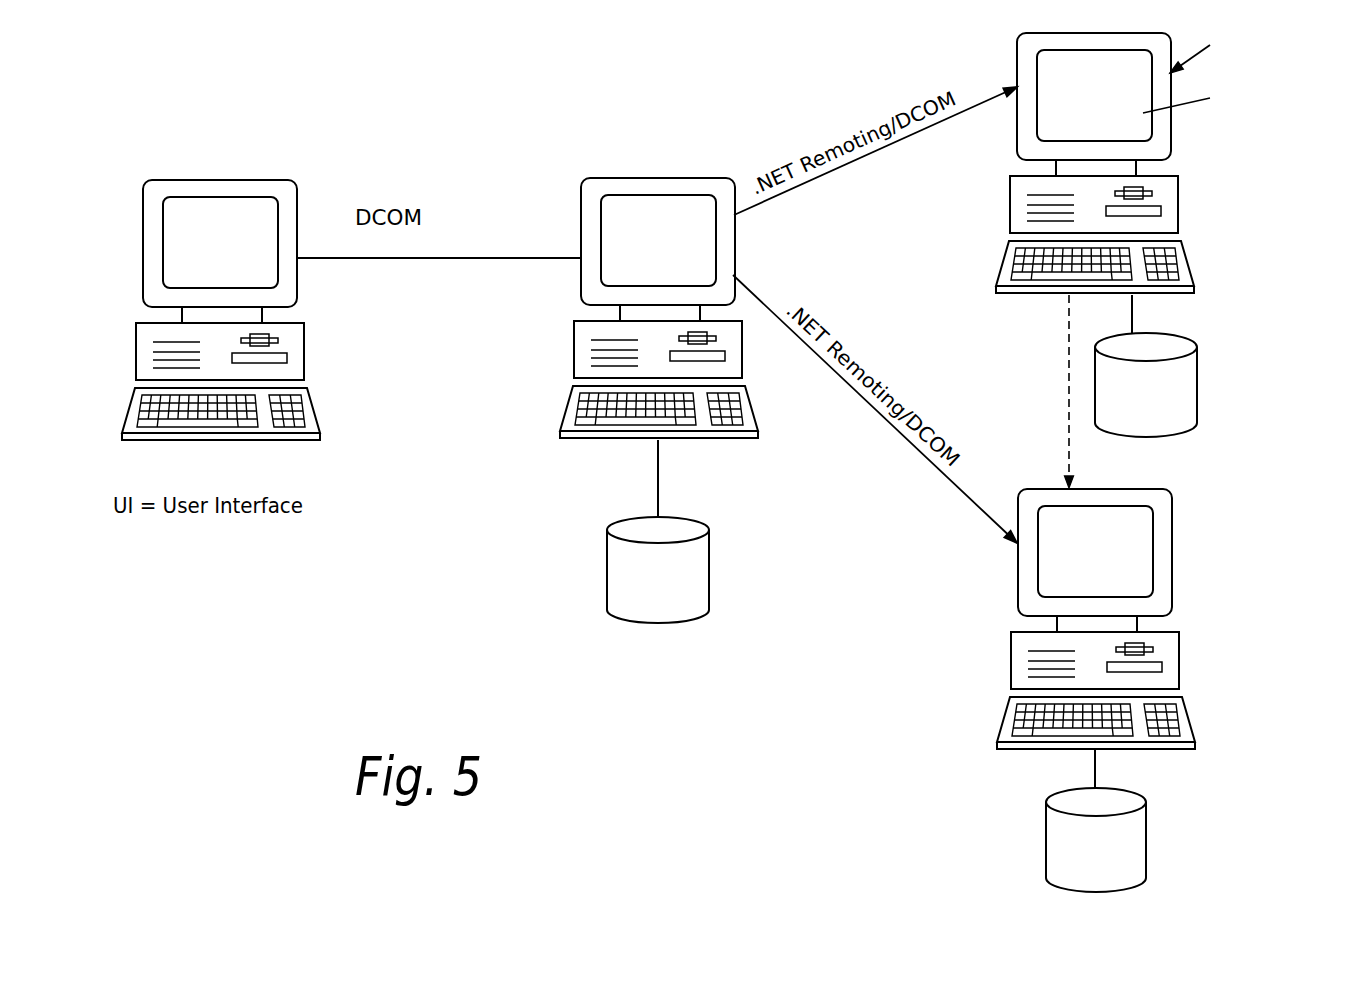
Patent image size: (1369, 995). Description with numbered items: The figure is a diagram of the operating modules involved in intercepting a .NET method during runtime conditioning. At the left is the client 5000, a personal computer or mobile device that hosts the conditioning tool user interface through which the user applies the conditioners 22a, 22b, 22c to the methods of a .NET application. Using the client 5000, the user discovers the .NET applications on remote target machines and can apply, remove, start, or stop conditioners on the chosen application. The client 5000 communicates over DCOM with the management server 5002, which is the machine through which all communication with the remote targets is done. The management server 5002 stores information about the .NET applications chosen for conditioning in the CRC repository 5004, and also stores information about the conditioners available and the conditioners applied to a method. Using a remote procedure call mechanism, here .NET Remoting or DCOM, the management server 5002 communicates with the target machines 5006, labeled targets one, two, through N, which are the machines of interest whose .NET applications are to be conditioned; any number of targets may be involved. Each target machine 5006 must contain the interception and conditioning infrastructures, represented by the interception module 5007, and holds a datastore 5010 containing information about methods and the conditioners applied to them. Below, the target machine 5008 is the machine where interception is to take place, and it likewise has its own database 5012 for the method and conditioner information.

The conditioner 22a is at (246, 207).
The conditioner 22b is at (298, 154).
The conditioner 22c is at (298, 167).
The client 5000 is at (298, 217).
The management server 5002 is at (582, 218).
The CRC repository 5004 is at (712, 567).
The target machine 5006 is at (1017, 75).
The interception module 5007 is at (1247, 137).
The target machine 5008 is at (1170, 555).
The datastore 5010 is at (1197, 410).
The database 5012 is at (1045, 840).